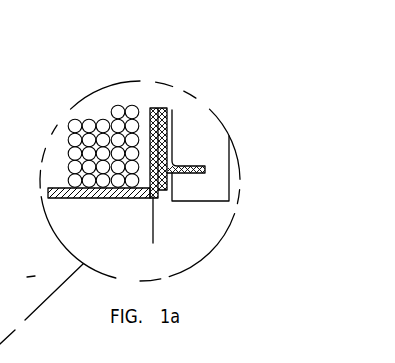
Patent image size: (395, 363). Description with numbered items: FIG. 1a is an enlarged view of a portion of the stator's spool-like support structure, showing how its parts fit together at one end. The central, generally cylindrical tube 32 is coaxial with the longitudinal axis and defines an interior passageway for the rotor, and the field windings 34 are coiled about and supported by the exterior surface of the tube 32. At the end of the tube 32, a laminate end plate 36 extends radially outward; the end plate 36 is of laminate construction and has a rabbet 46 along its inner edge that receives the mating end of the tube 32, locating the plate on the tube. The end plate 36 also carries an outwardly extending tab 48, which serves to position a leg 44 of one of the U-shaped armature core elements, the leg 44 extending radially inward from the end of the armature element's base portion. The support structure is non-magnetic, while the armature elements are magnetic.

The tube 32 is at (82, 197).
The field windings 34 is at (88, 128).
The end plate 36 is at (170, 113).
The leg 44 is at (189, 189).
The rabbet 46 is at (153, 197).
The tab 48 is at (202, 163).